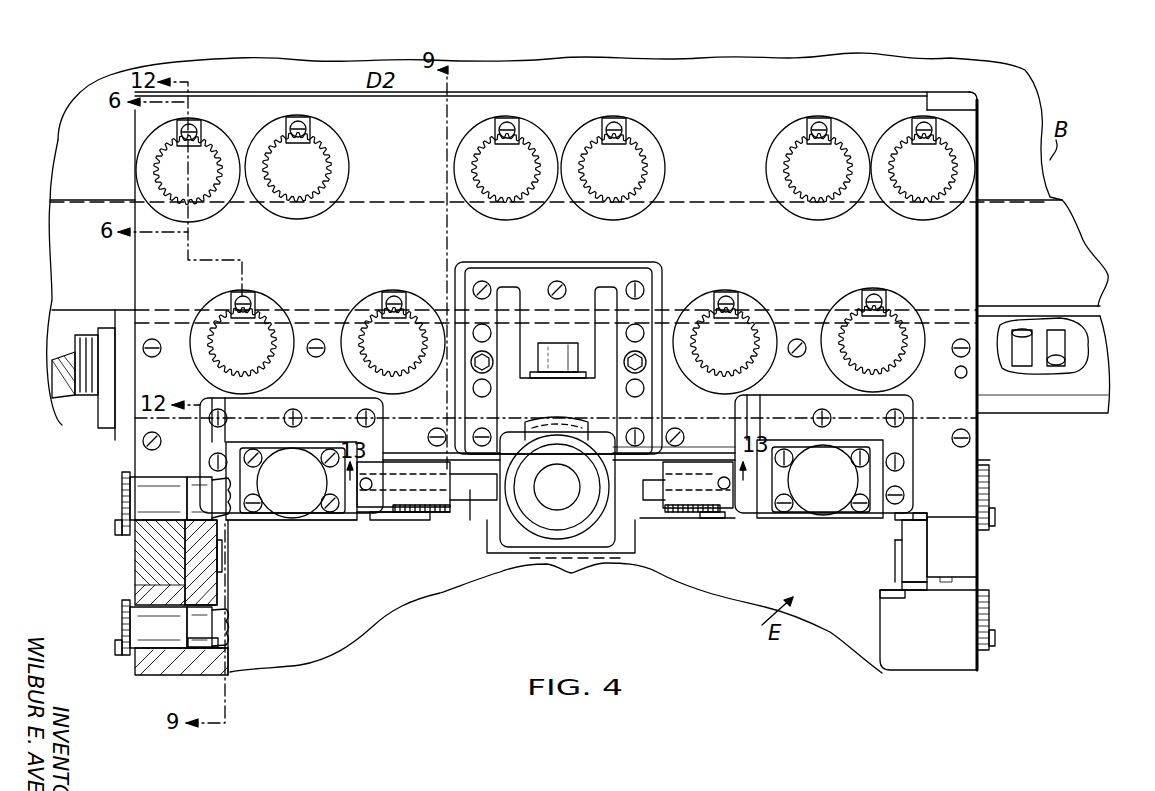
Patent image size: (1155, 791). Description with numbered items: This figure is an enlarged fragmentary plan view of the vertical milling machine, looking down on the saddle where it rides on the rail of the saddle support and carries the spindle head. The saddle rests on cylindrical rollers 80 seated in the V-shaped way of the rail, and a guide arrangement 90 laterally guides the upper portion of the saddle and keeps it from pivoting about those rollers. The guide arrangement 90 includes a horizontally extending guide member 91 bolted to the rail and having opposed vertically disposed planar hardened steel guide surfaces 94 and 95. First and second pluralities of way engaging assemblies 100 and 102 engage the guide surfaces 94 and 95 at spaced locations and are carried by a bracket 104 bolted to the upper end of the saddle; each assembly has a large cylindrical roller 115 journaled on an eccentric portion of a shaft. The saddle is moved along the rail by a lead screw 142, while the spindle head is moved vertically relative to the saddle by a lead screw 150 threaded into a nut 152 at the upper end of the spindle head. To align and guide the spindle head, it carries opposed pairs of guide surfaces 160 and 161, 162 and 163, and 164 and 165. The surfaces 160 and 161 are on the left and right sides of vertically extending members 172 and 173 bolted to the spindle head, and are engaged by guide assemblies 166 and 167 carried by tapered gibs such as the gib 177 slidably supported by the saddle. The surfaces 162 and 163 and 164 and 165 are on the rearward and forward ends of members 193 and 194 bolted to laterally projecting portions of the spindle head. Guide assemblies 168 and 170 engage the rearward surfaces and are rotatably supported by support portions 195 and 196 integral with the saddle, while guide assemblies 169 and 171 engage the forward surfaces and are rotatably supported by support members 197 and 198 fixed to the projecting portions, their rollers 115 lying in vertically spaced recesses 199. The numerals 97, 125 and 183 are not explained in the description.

The cylindrical rollers 80 is at (1062, 362).
The guide arrangement 90 is at (722, 112).
The guide member 91 is at (1070, 232).
The guide surface 94 is at (55, 318).
The guide surface 95 is at (58, 194).
The side wall 97 is at (980, 462).
The way engaging assemblies 100 is at (333, 320).
The way engaging assemblies 102 is at (570, 120).
The bracket 104 is at (255, 115).
The cylindrical roller 115 is at (210, 492).
The central bracket 125 is at (430, 444).
The lead screw 142 is at (52, 380).
The lead screw 150 is at (575, 498).
The nut 152 is at (610, 530).
The guide surface 160 is at (450, 500).
The guide surface 161 is at (698, 485).
The guide surface 162 is at (215, 520).
The guide surface 163 is at (228, 615).
The guide surface 164 is at (920, 513).
The guide surface 165 is at (905, 594).
The guide assemblies 166 is at (400, 512).
The guide assemblies 167 is at (712, 518).
The guide assemblies 168 is at (108, 522).
The guide assemblies 169 is at (110, 643).
The guide assemblies 170 is at (1000, 522).
The guide assemblies 171 is at (1000, 640).
The vertically extending member 172 is at (450, 500).
The vertically extending member 173 is at (657, 490).
The gib 177 is at (715, 468).
The left slide block 183 is at (403, 484).
The vertically extending member 193 is at (222, 560).
The vertically extending member 194 is at (912, 560).
The support portion 195 is at (135, 548).
The support portion 196 is at (250, 500).
The support member 197 is at (160, 675).
The support member 198 is at (950, 670).
The recesses 199 is at (204, 658).